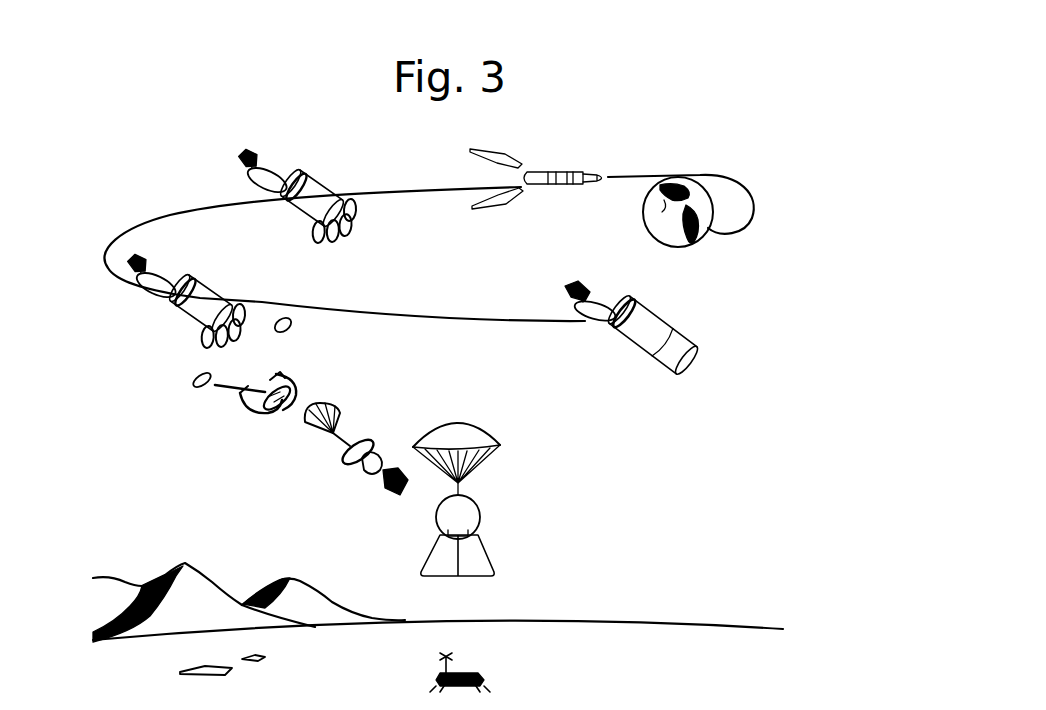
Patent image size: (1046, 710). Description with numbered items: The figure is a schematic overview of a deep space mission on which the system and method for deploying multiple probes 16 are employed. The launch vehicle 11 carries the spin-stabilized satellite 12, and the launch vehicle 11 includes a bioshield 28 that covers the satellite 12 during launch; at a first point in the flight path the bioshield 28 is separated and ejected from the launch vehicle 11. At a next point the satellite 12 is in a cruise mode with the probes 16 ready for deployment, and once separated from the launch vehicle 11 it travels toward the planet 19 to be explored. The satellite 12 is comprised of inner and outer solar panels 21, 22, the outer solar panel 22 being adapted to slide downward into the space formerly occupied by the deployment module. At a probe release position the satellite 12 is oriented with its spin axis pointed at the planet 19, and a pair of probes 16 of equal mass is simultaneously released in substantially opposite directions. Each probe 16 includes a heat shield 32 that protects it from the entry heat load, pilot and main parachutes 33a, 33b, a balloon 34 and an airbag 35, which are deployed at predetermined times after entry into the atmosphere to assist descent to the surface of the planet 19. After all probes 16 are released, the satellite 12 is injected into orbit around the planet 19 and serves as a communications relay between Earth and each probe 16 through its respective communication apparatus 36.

The launch vehicle 11 is at (557, 172).
The satellite 12 is at (334, 178).
The probes 16 is at (296, 325).
The planet 19 is at (695, 625).
The inner solar panel 21 is at (642, 337).
The outer solar panel 22 is at (687, 368).
The bioshield 28 is at (503, 203).
The heat shield 32 is at (367, 438).
The pilot parachute 33a is at (326, 403).
The main parachute 33b is at (362, 473).
The balloon 34 is at (483, 515).
The airbag 35 is at (497, 566).
The communication apparatus 36 is at (434, 676).